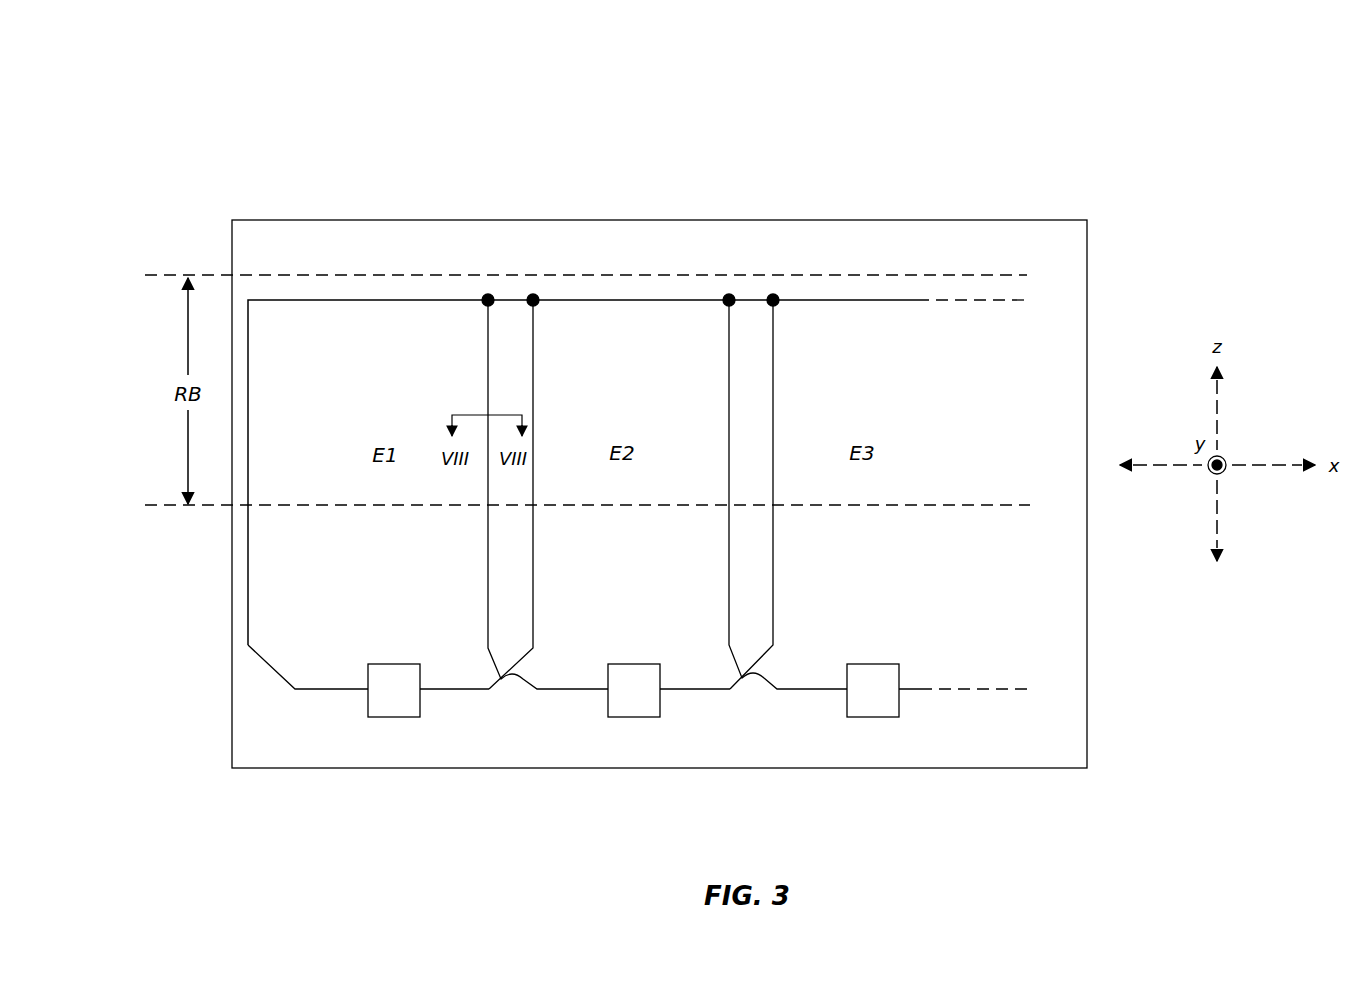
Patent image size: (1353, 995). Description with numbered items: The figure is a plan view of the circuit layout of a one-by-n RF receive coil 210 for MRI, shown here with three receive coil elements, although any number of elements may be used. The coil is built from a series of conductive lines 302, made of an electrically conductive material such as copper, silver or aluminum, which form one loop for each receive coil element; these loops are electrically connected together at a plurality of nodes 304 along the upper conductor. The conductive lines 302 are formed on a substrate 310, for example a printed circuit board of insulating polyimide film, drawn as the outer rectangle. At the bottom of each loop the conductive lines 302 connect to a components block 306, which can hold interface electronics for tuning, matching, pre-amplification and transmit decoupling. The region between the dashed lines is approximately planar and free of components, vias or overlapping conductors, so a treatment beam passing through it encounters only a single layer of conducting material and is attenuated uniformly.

The RF receive coil 210 is at (245, 76).
The substrate 310 is at (862, 218).
The conductive lines 302 is at (375, 303).
The nodes 304 is at (800, 332).
The components block 306 is at (872, 663).